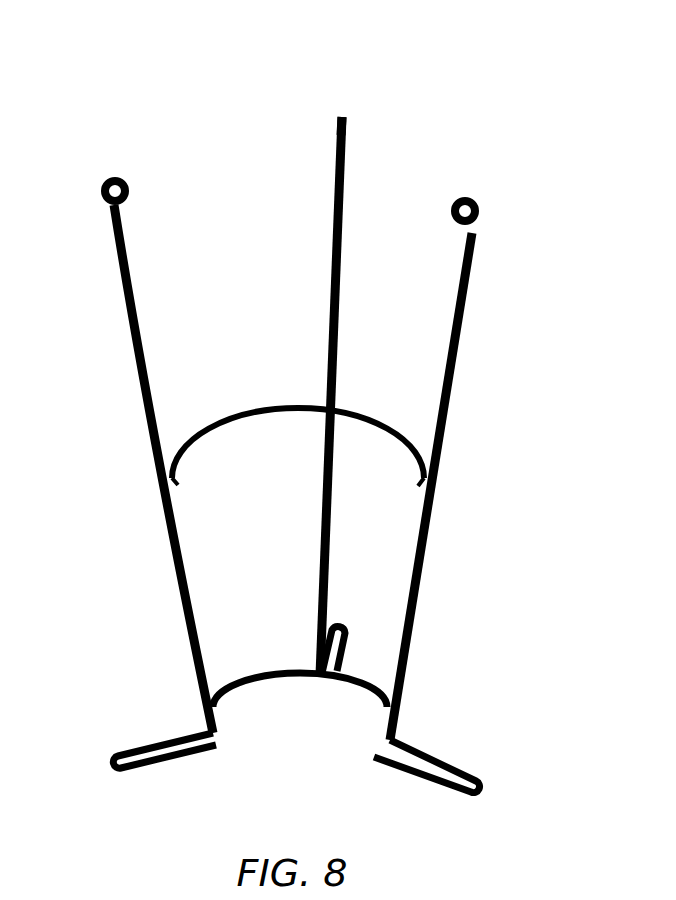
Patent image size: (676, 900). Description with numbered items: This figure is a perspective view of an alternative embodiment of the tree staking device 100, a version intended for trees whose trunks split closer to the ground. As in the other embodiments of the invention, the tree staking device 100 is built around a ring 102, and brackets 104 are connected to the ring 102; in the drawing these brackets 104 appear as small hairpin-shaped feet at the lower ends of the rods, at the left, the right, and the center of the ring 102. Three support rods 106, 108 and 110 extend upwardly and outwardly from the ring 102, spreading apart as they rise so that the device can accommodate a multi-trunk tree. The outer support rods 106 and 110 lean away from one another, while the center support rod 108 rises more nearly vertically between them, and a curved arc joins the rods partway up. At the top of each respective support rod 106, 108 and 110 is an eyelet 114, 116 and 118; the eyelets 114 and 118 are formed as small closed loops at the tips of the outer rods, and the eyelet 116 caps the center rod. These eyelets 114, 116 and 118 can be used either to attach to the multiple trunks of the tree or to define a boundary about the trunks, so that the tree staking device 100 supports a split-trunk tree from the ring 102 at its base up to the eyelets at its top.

The tree staking device 100 is at (183, 104).
The ring 102 is at (397, 712).
The brackets 104 is at (348, 626).
The support rod 106 is at (122, 288).
The support rod 108 is at (336, 257).
The support rod 110 is at (462, 335).
The eyelet 114 is at (113, 178).
The eyelet 116 is at (344, 113).
The eyelet 118 is at (476, 198).